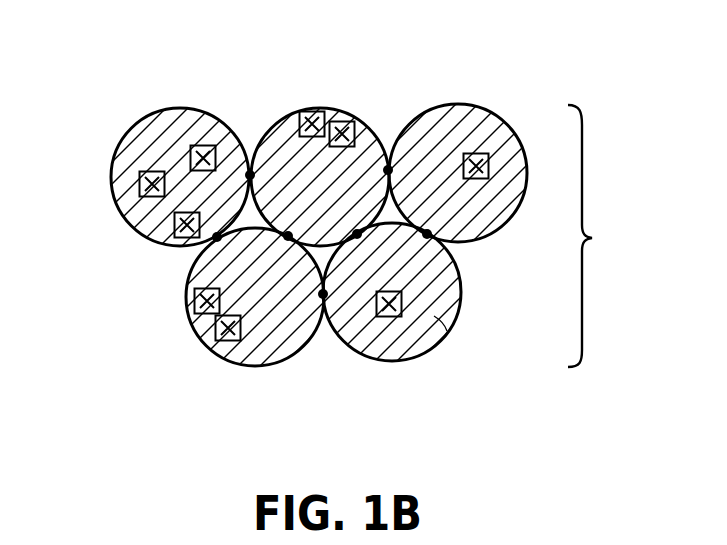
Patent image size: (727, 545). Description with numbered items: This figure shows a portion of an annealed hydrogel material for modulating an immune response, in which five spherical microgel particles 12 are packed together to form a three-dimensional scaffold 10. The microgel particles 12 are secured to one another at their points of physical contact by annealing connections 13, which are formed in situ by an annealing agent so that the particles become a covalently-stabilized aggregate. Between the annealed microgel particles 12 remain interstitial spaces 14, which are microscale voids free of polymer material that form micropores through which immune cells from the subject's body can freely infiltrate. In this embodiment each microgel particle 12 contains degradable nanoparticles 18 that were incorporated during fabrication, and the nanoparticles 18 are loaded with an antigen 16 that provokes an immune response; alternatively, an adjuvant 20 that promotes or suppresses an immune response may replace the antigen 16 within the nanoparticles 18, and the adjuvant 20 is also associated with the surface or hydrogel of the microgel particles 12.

The scaffold 10 is at (626, 249).
The microgel particles 12 is at (155, 122).
The annealing connections 13 is at (217, 240).
The interstitial spaces 14 is at (256, 200).
The antigen 16 is at (193, 150).
The degradable nanoparticles 18 is at (195, 147).
The adjuvant 20 is at (445, 330).